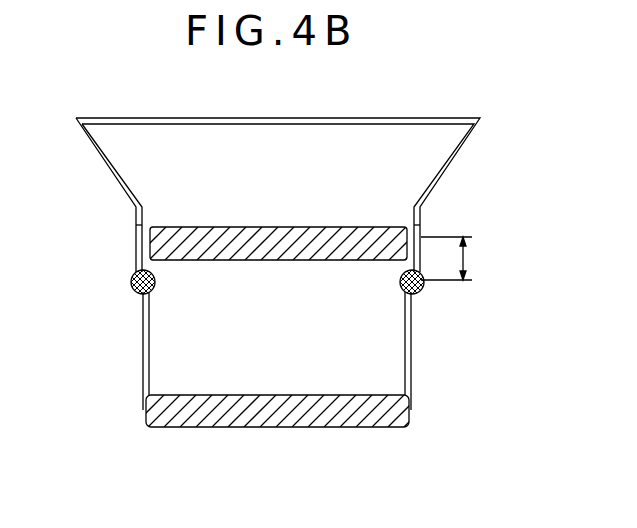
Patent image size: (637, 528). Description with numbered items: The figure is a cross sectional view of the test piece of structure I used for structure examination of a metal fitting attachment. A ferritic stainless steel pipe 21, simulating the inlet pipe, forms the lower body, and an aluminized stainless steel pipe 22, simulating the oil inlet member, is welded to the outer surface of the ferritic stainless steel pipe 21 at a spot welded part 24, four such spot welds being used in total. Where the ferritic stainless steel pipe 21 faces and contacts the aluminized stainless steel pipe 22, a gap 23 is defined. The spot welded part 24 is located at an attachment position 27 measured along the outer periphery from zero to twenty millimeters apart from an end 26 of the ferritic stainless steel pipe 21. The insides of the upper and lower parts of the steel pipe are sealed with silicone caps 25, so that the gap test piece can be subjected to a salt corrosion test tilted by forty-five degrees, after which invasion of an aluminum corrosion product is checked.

The ferritic stainless steel pipe 21 is at (143, 376).
The aluminized stainless steel pipe 22 is at (119, 183).
The gap 23 is at (147, 223).
The spot welded part 24 is at (131, 283).
The silicone cap 25 is at (302, 236).
The end of the ferritic stainless steel pipe 26 is at (422, 215).
The attachment position 27 is at (418, 294).